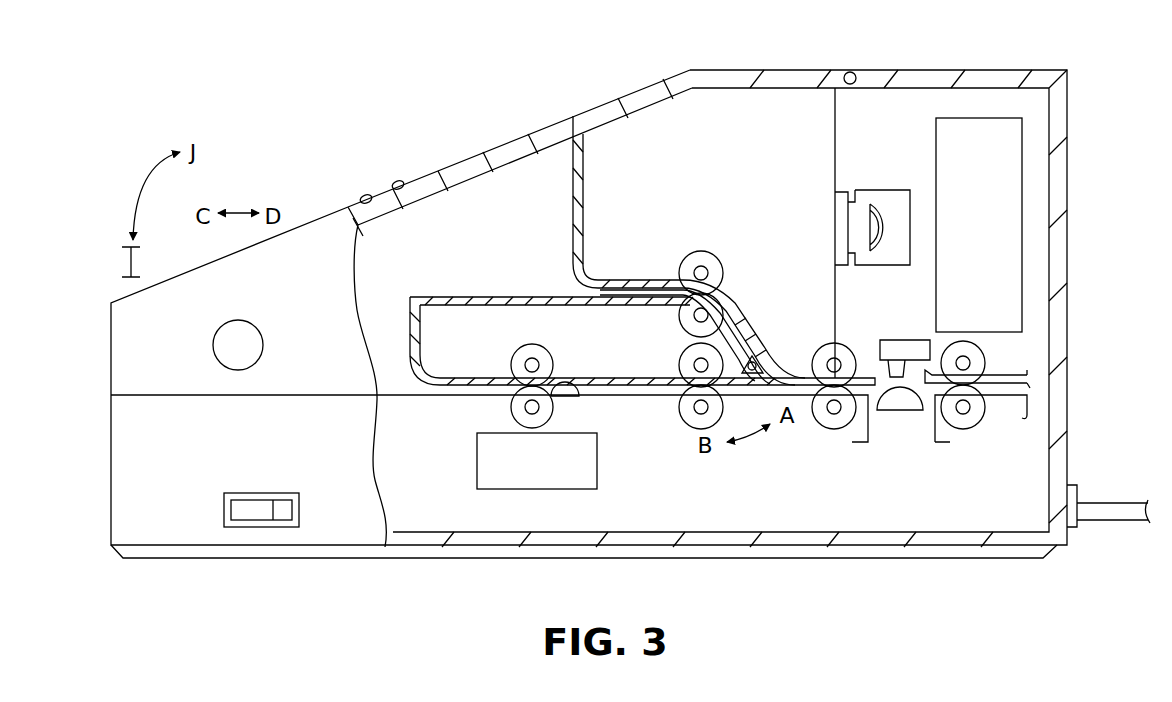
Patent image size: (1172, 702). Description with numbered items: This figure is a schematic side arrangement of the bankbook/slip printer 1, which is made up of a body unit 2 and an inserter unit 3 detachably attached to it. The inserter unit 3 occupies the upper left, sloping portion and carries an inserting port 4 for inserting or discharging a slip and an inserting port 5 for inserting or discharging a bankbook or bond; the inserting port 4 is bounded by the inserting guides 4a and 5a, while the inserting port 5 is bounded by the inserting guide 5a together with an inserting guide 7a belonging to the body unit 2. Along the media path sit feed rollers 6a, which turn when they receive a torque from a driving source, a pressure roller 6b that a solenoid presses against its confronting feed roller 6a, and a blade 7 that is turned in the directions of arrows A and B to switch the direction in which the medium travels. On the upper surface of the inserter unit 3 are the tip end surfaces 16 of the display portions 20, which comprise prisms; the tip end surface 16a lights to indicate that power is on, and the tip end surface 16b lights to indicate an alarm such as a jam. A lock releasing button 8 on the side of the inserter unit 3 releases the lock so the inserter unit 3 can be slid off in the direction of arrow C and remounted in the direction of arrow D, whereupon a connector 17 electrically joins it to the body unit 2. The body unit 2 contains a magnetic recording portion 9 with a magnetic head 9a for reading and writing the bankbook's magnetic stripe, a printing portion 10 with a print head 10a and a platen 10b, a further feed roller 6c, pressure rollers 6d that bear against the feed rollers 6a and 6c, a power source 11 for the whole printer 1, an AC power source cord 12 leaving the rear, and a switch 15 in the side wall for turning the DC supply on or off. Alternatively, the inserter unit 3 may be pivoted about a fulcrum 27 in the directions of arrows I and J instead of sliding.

The bankbook/slip printer 1 is at (243, 147).
The body unit 2 is at (906, 68).
The inserter unit 3 is at (510, 141).
The inserting port 4 is at (660, 250).
The inserting guide 4a is at (572, 196).
The inserting port 5 is at (596, 317).
The inserting guide 5a is at (407, 295).
The feed roller 6a is at (513, 352).
The pressure roller 6b is at (703, 251).
The feed roller 6c is at (986, 358).
The pressure roller 6d is at (511, 408).
The blade 7 is at (764, 330).
The inserting guide 7a is at (405, 398).
The lock releasing button 8 is at (260, 355).
The magnetic recording portion 9 is at (600, 468).
The magnetic head 9a is at (578, 402).
The printing portion 10 is at (896, 399).
The print head 10a is at (894, 343).
The platen 10b is at (905, 420).
The power source 11 is at (1022, 301).
The AC power source cord 12 is at (1117, 521).
The switch 15 is at (262, 523).
The tip end surfaces 16 is at (371, 144).
The tip end surface 16a is at (364, 195).
The tip end surface 16b is at (398, 181).
The connector 17 is at (850, 183).
The display portions 20 is at (350, 199).
The fulcrum 27 is at (846, 71).